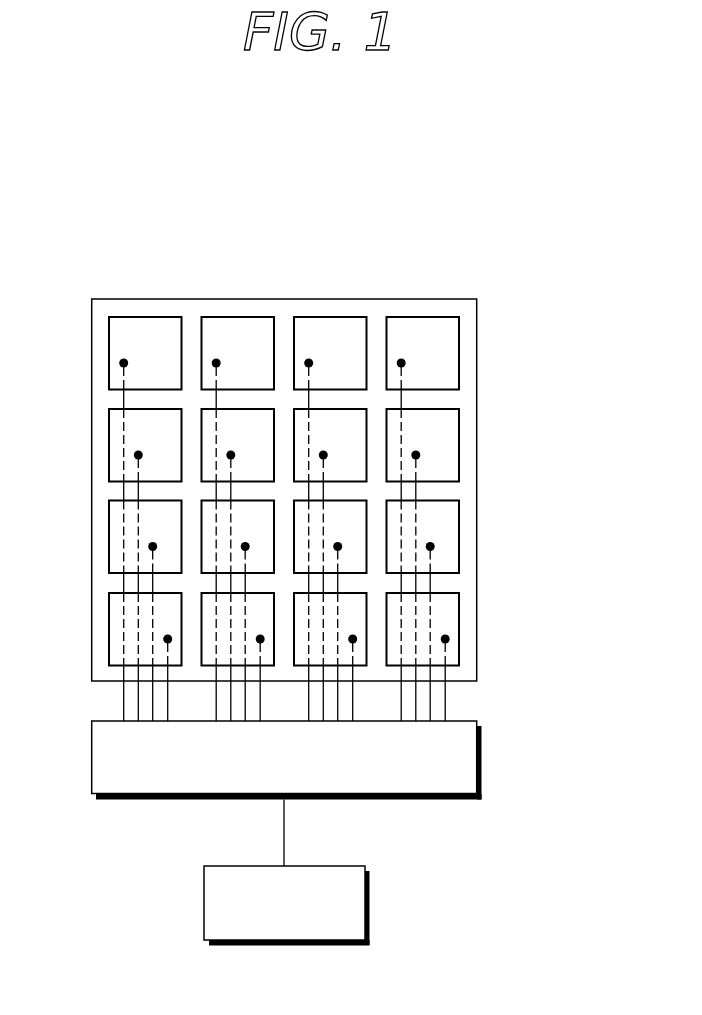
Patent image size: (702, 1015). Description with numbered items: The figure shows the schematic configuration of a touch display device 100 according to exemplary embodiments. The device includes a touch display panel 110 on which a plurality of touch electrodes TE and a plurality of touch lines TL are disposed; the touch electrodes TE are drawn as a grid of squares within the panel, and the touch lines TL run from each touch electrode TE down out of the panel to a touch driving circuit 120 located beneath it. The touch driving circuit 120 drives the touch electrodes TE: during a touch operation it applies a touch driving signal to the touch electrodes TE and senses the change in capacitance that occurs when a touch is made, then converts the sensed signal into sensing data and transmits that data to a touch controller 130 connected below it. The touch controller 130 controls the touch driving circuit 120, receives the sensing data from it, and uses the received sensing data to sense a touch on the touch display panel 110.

The touch display device 100 is at (69, 201).
The touch display panel 110 is at (477, 343).
The touch electrodes TE is at (459, 426).
The touch lines TL is at (447, 693).
The touch driving circuit 120 is at (268, 770).
The touch controller 130 is at (268, 917).